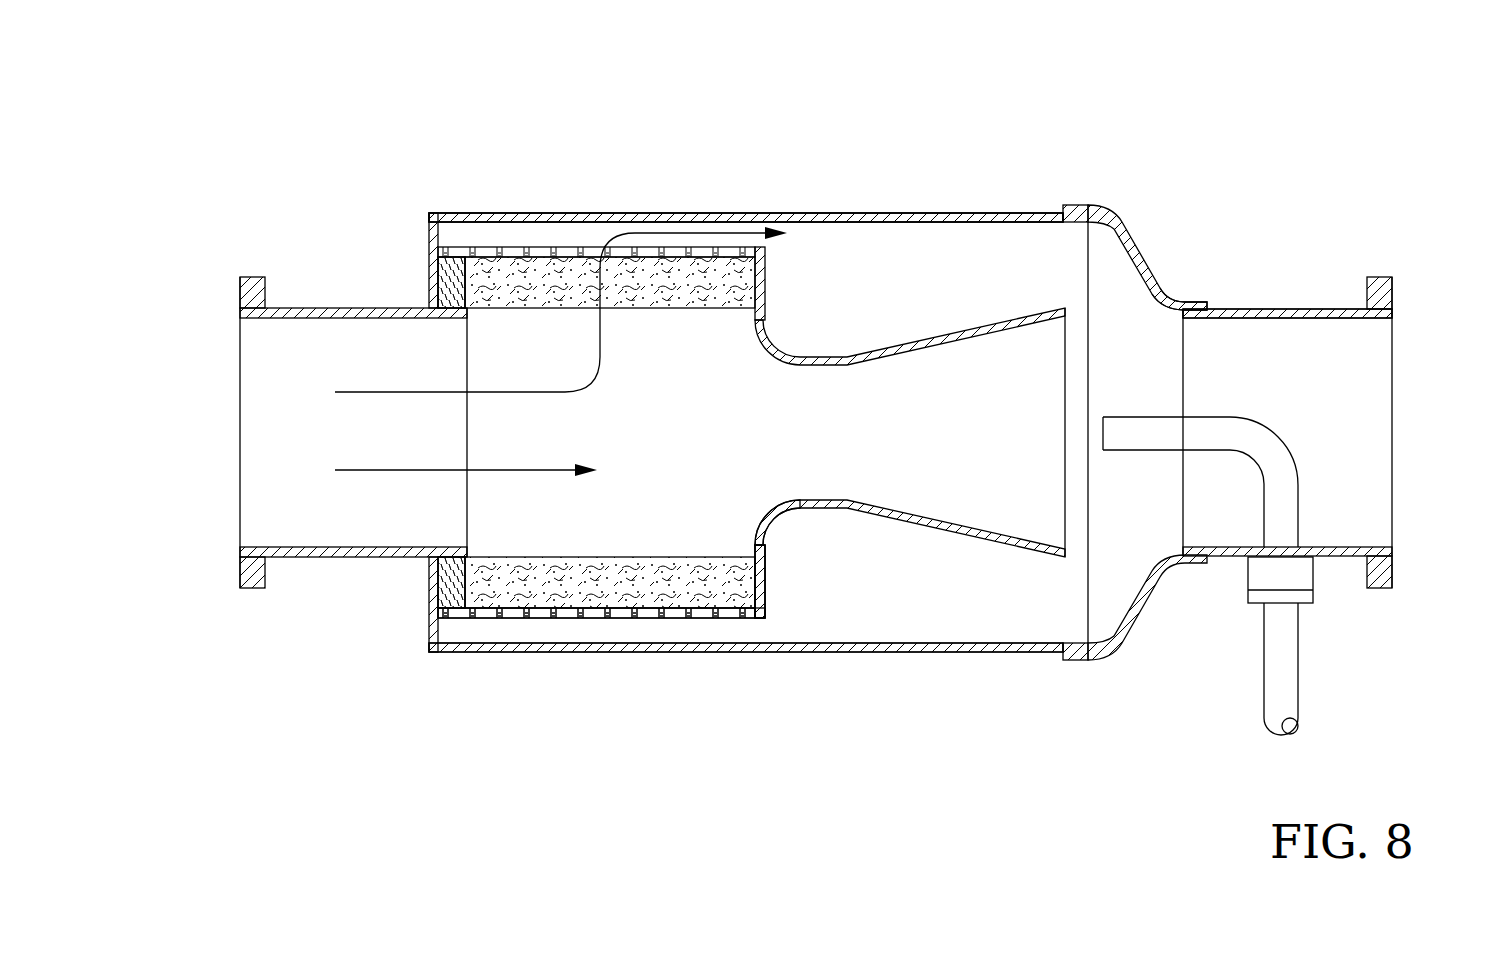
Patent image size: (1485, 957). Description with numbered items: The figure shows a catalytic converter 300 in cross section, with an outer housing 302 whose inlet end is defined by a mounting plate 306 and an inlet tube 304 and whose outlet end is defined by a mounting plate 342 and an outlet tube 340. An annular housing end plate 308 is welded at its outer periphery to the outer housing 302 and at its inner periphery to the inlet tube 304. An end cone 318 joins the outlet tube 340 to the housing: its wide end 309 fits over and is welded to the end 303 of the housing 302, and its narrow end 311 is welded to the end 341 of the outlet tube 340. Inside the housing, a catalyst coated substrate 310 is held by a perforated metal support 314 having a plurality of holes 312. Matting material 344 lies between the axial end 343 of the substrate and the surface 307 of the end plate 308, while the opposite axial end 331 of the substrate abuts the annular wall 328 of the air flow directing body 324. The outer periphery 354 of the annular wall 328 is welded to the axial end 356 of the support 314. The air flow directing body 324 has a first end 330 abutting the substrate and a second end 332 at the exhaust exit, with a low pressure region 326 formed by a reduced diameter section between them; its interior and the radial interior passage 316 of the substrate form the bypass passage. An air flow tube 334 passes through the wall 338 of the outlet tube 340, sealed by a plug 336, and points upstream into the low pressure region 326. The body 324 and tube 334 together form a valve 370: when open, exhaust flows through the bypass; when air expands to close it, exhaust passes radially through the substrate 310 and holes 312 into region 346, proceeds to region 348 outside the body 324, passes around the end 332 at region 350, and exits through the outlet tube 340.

The catalytic converter 300 is at (750, 211).
The outer housing 302 is at (849, 213).
The end of the housing 303 is at (1075, 225).
The inlet tube 304 is at (295, 307).
The mounting plate 306 is at (240, 292).
The surface of the end plate 307 is at (432, 580).
The annular housing end plate 308 is at (432, 226).
The wide end 309 is at (1087, 209).
The catalyst coated substrate 310 is at (492, 270).
The narrow end 311 is at (1195, 302).
The holes 312 is at (610, 618).
The perforated metal support 314 is at (515, 618).
The radial interior passage 316 is at (507, 523).
The end cone 318 is at (1140, 605).
The air flow directing body 324 is at (972, 540).
The low pressure region 326 is at (797, 388).
The annular wall 328 is at (752, 557).
The first end 330 is at (777, 520).
The opposite axial end of the substrate 331 is at (757, 590).
The second end 332 is at (1060, 322).
The air flow tube 334 is at (1133, 447).
The plug 336 is at (1295, 572).
The wall of the outlet tube 338 is at (1358, 547).
The outlet tube 340 is at (1313, 333).
The end of outlet pipe 341 is at (1203, 320).
The mounting plate 342 is at (1394, 283).
The axial end of the substrate 343 is at (460, 278).
The matting material 344 is at (448, 297).
The region 346 is at (604, 229).
The region 348 is at (952, 232).
The region 350 is at (1091, 656).
The outer periphery 354 is at (760, 615).
The axial end 356 is at (766, 622).
The valve 370 is at (1022, 432).